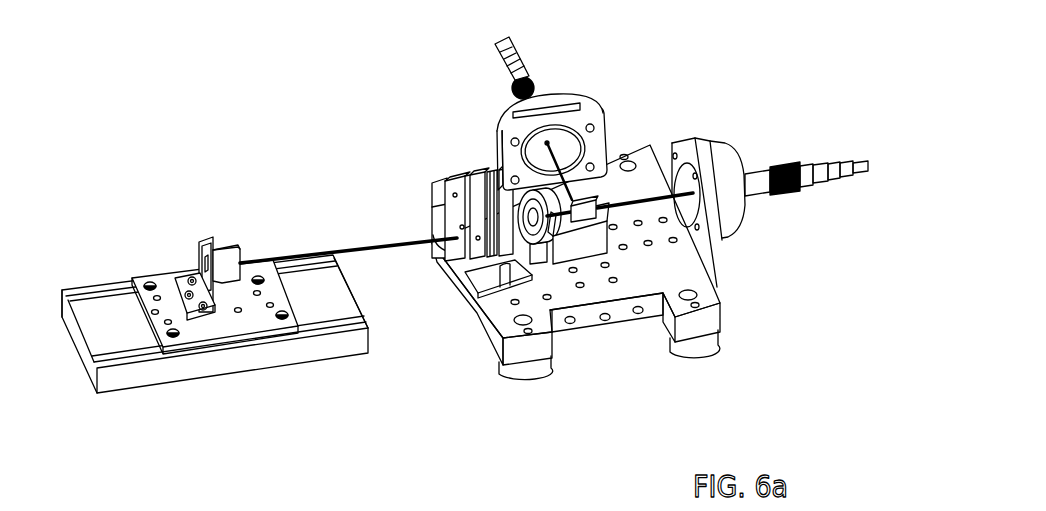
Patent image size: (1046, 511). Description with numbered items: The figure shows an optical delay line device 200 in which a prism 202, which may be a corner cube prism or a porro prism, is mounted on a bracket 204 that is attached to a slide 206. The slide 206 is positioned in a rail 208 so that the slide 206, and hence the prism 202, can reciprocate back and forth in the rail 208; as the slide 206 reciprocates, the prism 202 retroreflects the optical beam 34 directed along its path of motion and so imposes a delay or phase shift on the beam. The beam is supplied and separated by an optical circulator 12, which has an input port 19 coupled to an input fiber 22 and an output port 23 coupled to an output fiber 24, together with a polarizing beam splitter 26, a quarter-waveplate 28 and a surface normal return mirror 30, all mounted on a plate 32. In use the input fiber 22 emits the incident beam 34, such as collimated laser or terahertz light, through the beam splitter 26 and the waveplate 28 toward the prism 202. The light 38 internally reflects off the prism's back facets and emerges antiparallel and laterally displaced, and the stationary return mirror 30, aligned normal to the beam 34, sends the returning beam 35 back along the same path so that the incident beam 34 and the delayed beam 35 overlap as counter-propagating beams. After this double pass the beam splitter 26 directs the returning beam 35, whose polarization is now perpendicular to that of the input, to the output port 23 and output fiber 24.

The optical circulator 12 is at (605, 322).
The input port 19 is at (737, 220).
The input fiber 22 is at (857, 163).
The output port 23 is at (594, 107).
The output fiber 24 is at (508, 46).
The polarizing beam splitter 26 is at (603, 212).
The quarter-waveplate 28 is at (539, 256).
The surface normal return mirror 30 is at (461, 159).
The plate 32 is at (520, 357).
The incident beam 34 is at (415, 242).
The returning delayed beam 35 is at (574, 157).
The emerging beam 38 is at (368, 238).
The delay line device 200 is at (155, 250).
The prism 202 is at (227, 247).
The bracket 204 is at (203, 238).
The slide 206 is at (233, 327).
The rail 208 is at (143, 377).